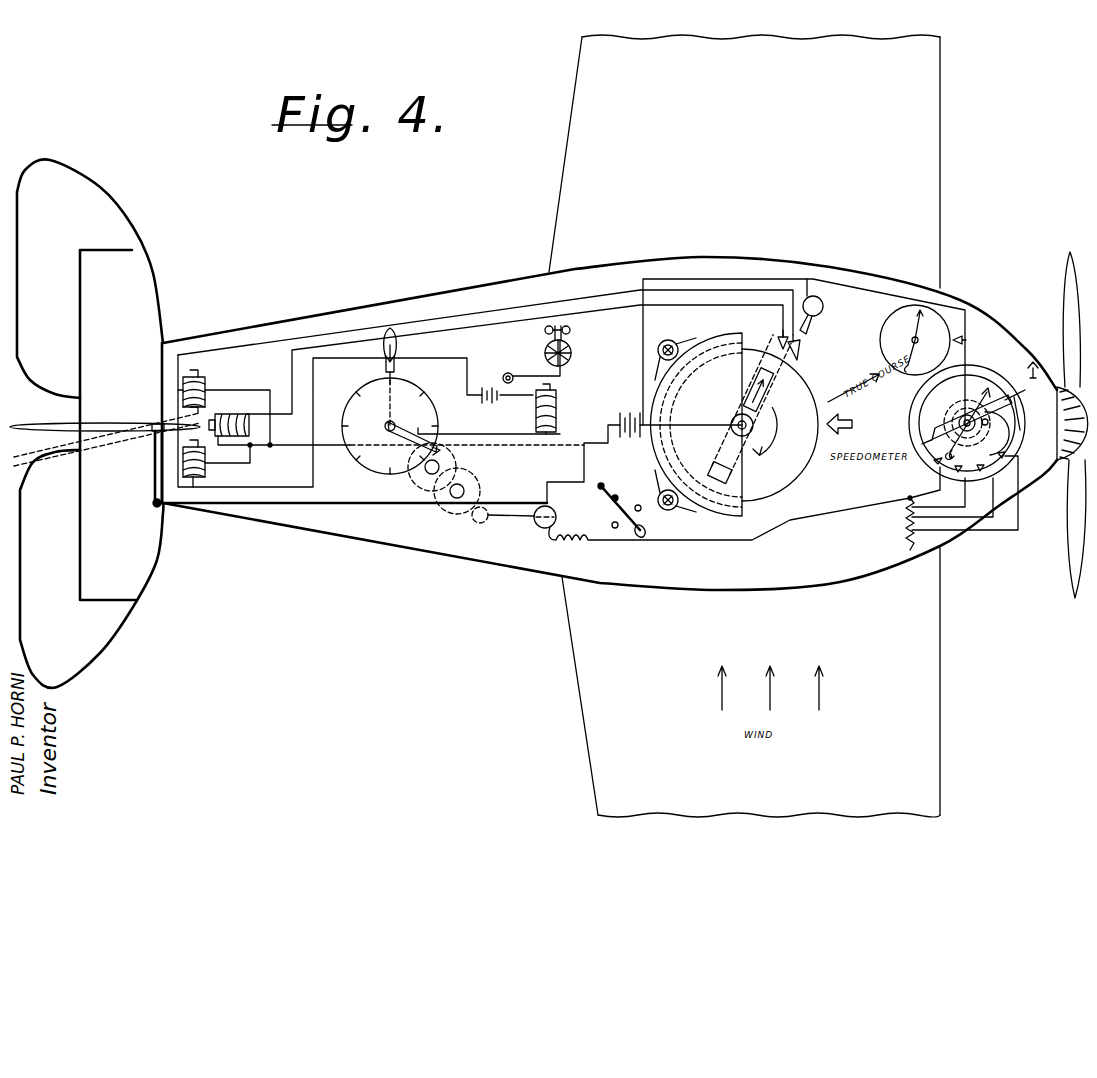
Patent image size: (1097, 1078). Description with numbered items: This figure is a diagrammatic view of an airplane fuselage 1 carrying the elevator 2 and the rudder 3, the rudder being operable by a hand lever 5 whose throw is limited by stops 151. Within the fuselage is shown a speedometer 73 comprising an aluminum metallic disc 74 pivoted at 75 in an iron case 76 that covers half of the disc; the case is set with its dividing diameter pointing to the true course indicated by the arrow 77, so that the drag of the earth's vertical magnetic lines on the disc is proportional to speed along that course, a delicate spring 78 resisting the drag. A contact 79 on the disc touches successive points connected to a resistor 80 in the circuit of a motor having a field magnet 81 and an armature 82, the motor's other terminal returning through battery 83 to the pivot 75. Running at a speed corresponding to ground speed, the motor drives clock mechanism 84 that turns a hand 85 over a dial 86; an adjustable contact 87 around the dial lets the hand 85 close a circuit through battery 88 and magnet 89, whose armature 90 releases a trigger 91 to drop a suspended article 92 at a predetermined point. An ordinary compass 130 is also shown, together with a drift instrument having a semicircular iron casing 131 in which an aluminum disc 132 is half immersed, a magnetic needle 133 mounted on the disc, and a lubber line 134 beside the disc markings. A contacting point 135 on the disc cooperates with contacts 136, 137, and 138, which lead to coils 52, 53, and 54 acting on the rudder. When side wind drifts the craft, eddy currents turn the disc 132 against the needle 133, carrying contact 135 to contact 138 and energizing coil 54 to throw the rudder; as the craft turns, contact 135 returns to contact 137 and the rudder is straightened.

The airplane fuselage 1 is at (502, 283).
The elevator 2 is at (90, 423).
The rudder 3 is at (98, 425).
The hand lever 5 is at (620, 500).
The coil 52 is at (193, 487).
The coil 53 is at (250, 425).
The coil 54 is at (198, 376).
The speedometer 73 is at (1018, 434).
The metallic disc 74 is at (926, 450).
The pivot 75 is at (952, 418).
The case 76 is at (984, 385).
The arrow 77 is at (977, 397).
The spring 78 is at (995, 433).
The contact 79 is at (977, 480).
The resistor 80 is at (908, 524).
The field magnet 81 is at (729, 529).
The armature 82 is at (537, 524).
The battery 83 is at (756, 391).
The clock mechanism 84 is at (442, 500).
The hand 85 is at (405, 440).
The dial 86 is at (353, 443).
The adjustable contact 87 is at (382, 368).
The battery 88 is at (490, 384).
The magnet 89 is at (558, 412).
The armature 90 is at (540, 374).
The trigger 91 is at (569, 336).
The article 92 is at (572, 358).
The compass 130 is at (937, 313).
The iron casing 131 is at (742, 505).
The aluminum disc 132 is at (770, 444).
The magnetic needle 133 is at (748, 392).
The lubber line 134 is at (852, 424).
The contacting point 135 is at (790, 372).
The contact 136 is at (780, 335).
The contact 137 is at (815, 330).
The contact 138 is at (805, 348).
The stops 151 is at (615, 540).